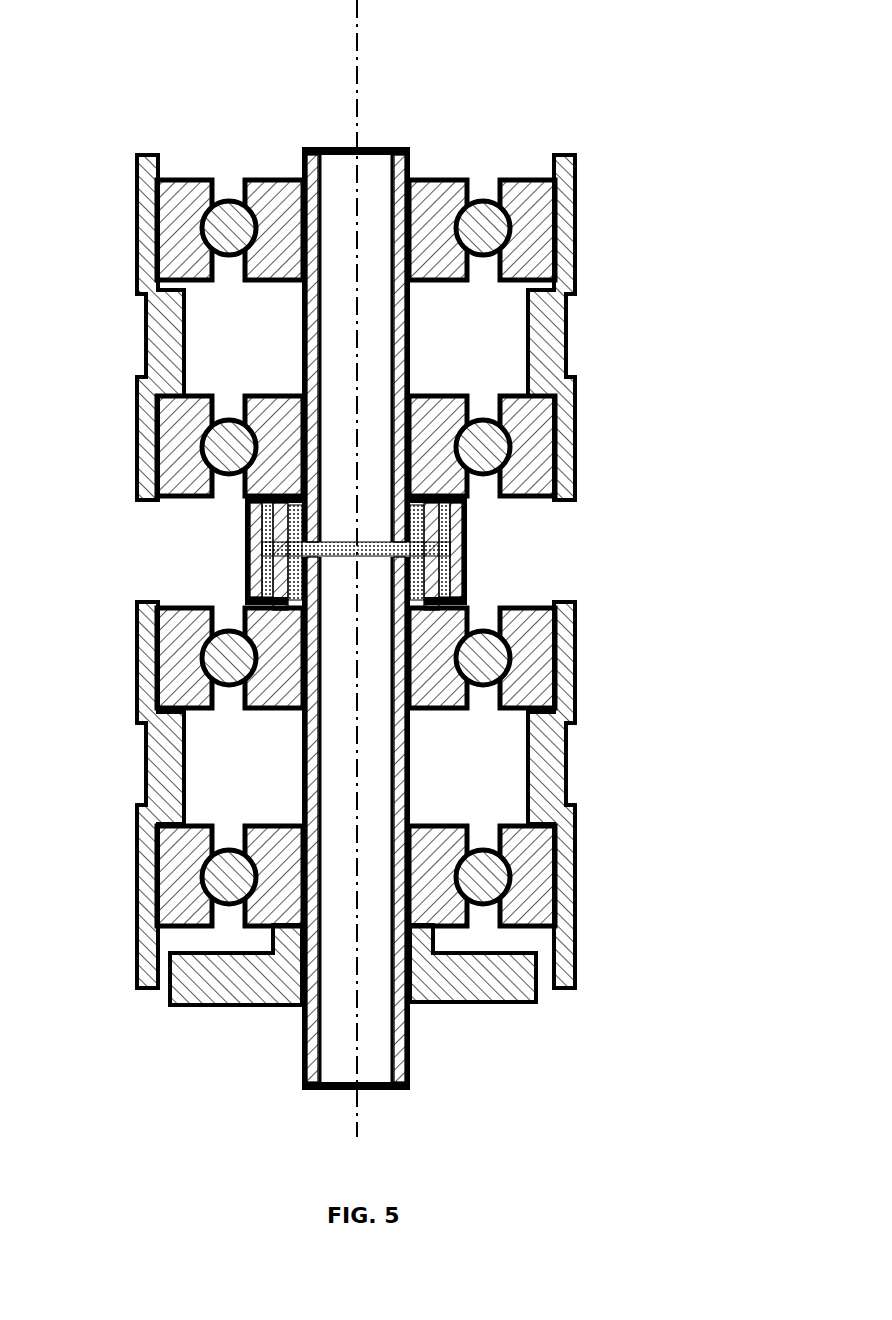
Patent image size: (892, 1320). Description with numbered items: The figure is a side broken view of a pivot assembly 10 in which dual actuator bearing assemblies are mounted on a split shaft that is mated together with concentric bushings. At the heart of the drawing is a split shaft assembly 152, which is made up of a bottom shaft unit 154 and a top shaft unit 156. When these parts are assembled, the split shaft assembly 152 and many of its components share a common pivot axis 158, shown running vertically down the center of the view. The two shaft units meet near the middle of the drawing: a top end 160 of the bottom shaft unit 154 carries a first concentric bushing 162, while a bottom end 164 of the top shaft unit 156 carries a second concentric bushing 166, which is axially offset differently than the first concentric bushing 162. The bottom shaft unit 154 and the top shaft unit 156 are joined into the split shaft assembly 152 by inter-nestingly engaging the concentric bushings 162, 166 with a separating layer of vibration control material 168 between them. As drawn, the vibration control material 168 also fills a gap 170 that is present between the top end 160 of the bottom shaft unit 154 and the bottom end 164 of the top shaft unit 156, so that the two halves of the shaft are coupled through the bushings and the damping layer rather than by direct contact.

The pivot assembly 10 is at (628, 120).
The split shaft assembly 152 is at (333, 120).
The bottom shaft unit 154 is at (443, 1003).
The top shaft unit 156 is at (410, 147).
The pivot axis 158 is at (358, 42).
The top end 160 is at (393, 597).
The first concentric bushing 162 is at (273, 586).
The bottom end 164 is at (397, 522).
The second concentric bushing 166 is at (245, 533).
The vibration control material 168 is at (445, 542).
The gap 170 is at (350, 550).